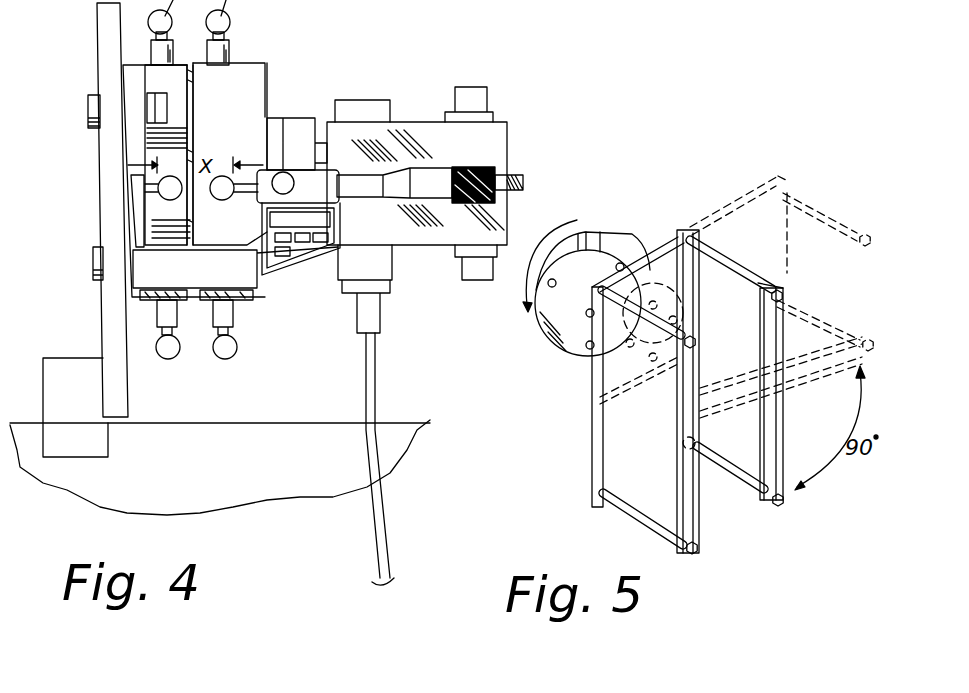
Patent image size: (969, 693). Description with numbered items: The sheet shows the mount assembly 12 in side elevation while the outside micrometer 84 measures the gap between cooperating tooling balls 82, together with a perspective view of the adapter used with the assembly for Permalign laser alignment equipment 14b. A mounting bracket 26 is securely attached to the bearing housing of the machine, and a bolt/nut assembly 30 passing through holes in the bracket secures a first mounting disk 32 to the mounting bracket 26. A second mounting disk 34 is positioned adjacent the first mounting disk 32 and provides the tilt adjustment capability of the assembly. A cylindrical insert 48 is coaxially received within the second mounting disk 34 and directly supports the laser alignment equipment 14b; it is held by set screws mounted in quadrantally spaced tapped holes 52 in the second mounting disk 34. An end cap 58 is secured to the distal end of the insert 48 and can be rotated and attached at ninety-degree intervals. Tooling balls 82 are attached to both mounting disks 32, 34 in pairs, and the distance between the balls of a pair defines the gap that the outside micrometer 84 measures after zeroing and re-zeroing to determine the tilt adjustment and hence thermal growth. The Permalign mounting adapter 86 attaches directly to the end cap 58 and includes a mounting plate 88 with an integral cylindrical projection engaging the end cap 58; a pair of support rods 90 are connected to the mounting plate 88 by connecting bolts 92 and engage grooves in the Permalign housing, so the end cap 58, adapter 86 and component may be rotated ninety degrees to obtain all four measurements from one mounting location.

In FIG. 4, the mount assembly 12 is at (322, 50).
In FIG. 4, the laser alignment equipment 14b is at (537, 87).
In FIG. 4, the mounting bracket 26 is at (108, 50).
In FIG. 4, the bolt/nut assembly 30 is at (90, 112).
In FIG. 4, the first mounting disk 32 is at (113, 173).
In FIG. 4, the second mounting disk 34 is at (243, 92).
In FIG. 4, the cylindrical insert 48 is at (273, 127).
In FIG. 4, the tapped holes 52 is at (248, 124).
In FIG. 4, the end cap 58 is at (297, 130).
In FIG. 5, the end cap 58 is at (607, 245).
In FIG. 4, the tooling balls 82 is at (170, 358).
In FIG. 4, the outside micrometer 84 is at (338, 252).
In FIG. 5, the Permalign mounting adapter 86 is at (777, 155).
In FIG. 5, the mounting plate 88 is at (610, 422).
In FIG. 5, the support rods 90 is at (767, 477).
In FIG. 5, the connecting bolts 92 is at (723, 256).